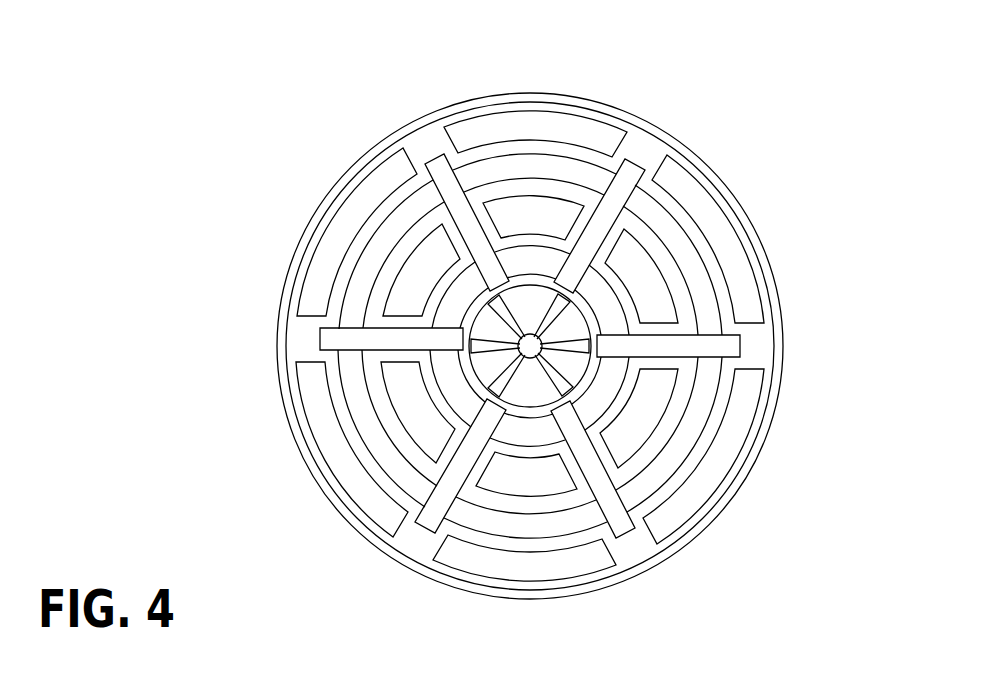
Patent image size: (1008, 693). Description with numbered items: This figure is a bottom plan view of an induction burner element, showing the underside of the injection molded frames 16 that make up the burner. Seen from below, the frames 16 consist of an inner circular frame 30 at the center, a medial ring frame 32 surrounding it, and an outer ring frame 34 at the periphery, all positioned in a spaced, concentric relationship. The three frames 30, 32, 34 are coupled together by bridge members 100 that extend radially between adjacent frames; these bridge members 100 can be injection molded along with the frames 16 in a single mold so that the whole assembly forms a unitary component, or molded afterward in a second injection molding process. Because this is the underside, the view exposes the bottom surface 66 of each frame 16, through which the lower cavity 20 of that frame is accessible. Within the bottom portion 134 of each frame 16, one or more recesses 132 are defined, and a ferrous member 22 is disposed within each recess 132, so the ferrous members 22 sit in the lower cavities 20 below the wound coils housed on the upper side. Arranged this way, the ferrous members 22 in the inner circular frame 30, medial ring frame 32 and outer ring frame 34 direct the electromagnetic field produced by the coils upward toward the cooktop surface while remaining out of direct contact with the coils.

The injection molded frame 16 is at (231, 289).
The lower cavity 20 is at (574, 107).
The ferrous member 22 is at (727, 438).
The inner circular frame 30 is at (462, 383).
The medial ring frame 32 is at (517, 518).
The outer ring frame 34 is at (792, 326).
The bottom surface 66 is at (757, 345).
The bridge member 100 is at (640, 190).
The recess 132 is at (736, 229).
The bottom portion 134 is at (281, 345).